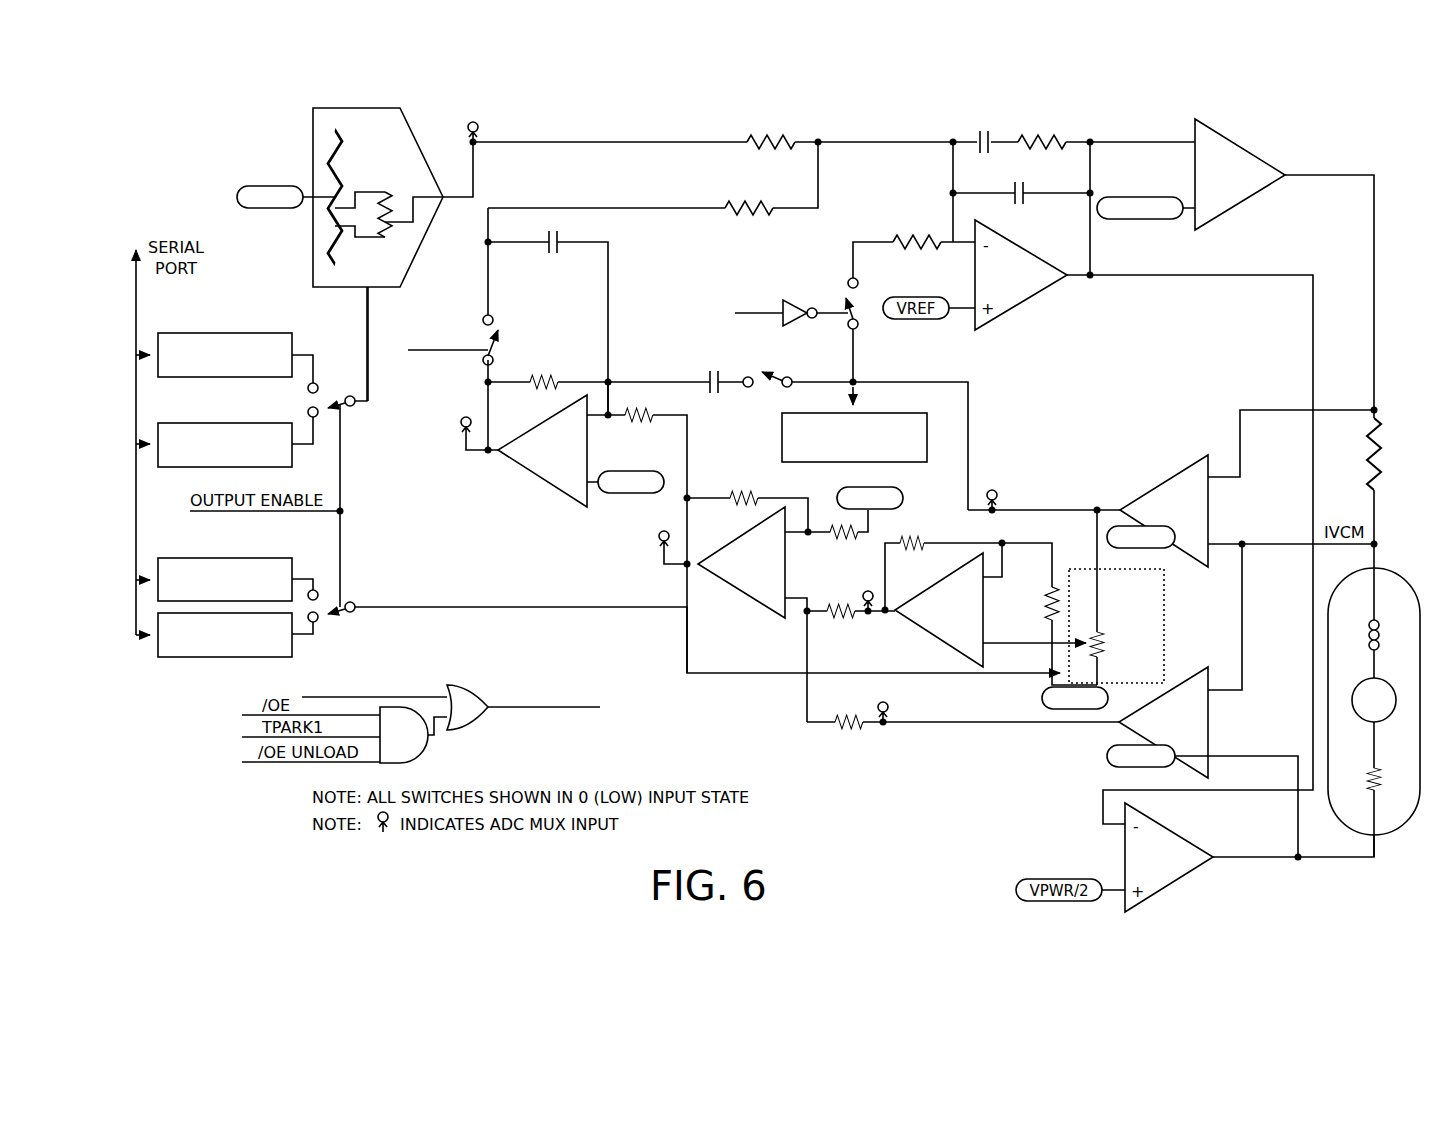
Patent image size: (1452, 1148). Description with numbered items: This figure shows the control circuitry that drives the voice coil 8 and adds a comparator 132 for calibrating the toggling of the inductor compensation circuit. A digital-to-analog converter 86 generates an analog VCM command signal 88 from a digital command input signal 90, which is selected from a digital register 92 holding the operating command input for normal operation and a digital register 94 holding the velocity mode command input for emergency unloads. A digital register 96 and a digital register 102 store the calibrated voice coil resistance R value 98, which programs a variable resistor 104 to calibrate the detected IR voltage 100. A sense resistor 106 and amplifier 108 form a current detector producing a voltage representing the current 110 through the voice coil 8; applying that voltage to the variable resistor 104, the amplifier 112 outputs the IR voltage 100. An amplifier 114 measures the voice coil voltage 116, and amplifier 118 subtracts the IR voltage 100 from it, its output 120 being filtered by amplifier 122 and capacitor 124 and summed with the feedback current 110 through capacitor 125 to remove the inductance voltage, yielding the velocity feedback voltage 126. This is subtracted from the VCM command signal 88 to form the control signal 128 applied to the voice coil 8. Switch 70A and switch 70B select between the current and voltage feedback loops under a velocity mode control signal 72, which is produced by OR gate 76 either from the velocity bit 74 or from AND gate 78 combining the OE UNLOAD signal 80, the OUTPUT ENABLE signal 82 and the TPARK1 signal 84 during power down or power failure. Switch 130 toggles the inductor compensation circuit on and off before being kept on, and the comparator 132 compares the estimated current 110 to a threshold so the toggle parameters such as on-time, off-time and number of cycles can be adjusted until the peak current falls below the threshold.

The voice coil 8 is at (1402, 568).
The switch 70A is at (508, 328).
The switch 70B is at (836, 292).
The velocity mode control signal 72 is at (430, 352).
The velocity bit 74 is at (437, 694).
The OR gate 76 is at (464, 684).
The AND gate 78 is at (430, 748).
The OE UNLOAD signal 80 is at (242, 762).
The OUTPUT ENABLE (OE) signal 82 is at (340, 462).
The TPARK1 signal 84 is at (242, 737).
The digital-to-analog converter (DAC) 86 is at (313, 133).
The VCM command signal 88 is at (576, 140).
The digital command input signal 90 is at (368, 312).
The digital register 92 is at (264, 333).
The digital register 94 is at (264, 423).
The digital register 96 is at (246, 558).
The calibrated voice coil resistance R value 98 is at (520, 611).
The IR voltage 100 is at (872, 616).
The digital register 102 is at (244, 657).
The variable resistor 104 is at (1162, 595).
The sense resistor 106 is at (1388, 422).
The amplifier 108 is at (1160, 476).
The current 110 is at (1108, 507).
The amplifier 112 is at (926, 636).
The amplifier 114 is at (1208, 710).
The voice coil voltage 116 is at (970, 724).
The amplifier 118 is at (744, 598).
The output 120 is at (672, 567).
The amplifier 122 is at (540, 480).
The capacitor 124 is at (548, 259).
The capacitor 125 is at (710, 368).
The velocity feedback voltage 126 is at (662, 212).
The control signal 128 is at (1328, 176).
The switch 130 is at (766, 392).
The comparator 132 is at (782, 453).